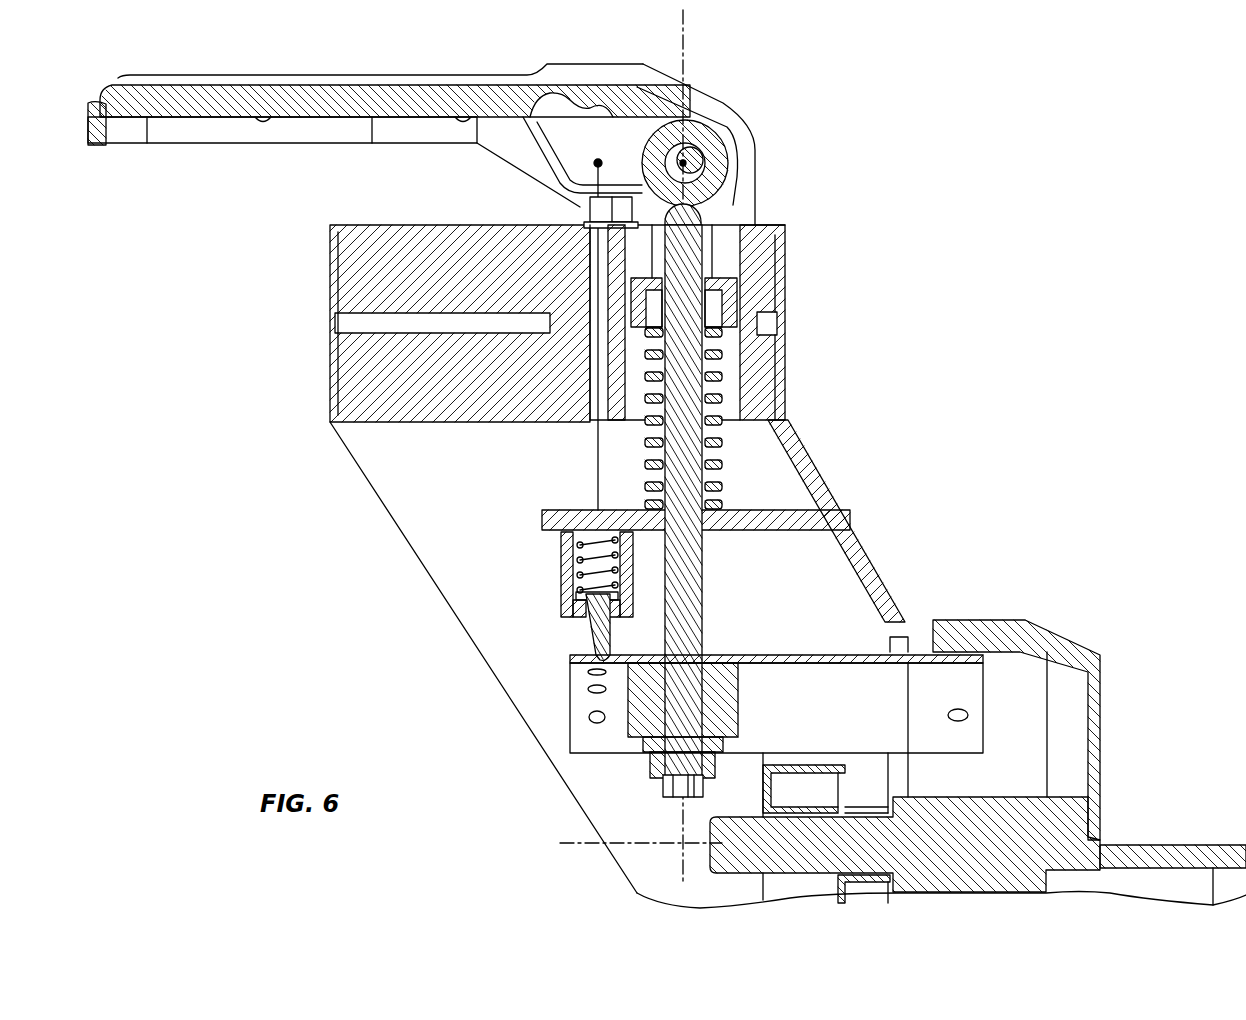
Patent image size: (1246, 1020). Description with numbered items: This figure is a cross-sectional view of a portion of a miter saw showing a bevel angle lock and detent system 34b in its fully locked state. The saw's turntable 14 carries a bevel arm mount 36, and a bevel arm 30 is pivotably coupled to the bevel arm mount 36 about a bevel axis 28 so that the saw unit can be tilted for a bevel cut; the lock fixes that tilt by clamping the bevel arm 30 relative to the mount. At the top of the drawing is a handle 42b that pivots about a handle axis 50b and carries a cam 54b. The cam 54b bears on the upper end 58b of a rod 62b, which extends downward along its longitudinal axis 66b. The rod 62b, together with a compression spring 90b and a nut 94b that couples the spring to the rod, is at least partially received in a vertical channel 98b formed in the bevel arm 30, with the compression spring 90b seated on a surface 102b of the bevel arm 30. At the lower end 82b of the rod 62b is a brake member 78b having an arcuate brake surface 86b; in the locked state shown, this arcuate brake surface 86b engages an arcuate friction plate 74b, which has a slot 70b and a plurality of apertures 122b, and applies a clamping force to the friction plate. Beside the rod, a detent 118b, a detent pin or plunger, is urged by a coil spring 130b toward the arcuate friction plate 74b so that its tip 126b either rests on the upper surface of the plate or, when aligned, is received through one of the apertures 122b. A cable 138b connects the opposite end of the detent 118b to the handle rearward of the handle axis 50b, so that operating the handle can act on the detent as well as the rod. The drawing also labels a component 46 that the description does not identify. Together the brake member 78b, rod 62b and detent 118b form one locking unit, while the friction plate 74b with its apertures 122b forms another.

The turntable 14 is at (1170, 845).
The bevel axis 28 is at (590, 846).
The bevel arm 30 is at (795, 458).
The bevel angle lock and detent system 34b is at (948, 303).
The bevel arm mount 36 is at (1030, 623).
The handle 42b is at (365, 76).
The block 46 is at (370, 225).
The handle axis 50b is at (688, 150).
The cam 54b is at (757, 187).
The upper end 58b is at (715, 220).
The rod 62b is at (690, 263).
The longitudinal axis 66b is at (683, 823).
The slot 70b is at (575, 749).
The arcuate friction plate 74b is at (850, 650).
The brake member 78b is at (707, 641).
The lower end 82b is at (650, 763).
The arcuate brake surface 86b is at (735, 653).
The compression spring 90b is at (705, 363).
The nut 94b is at (735, 300).
The vertical channel 98b is at (745, 401).
The surface 102b is at (775, 504).
The detent 118b is at (585, 631).
The apertures 122b is at (590, 717).
The tip 126b is at (582, 653).
The coil spring 130b is at (635, 561).
The cable 138b is at (597, 473).